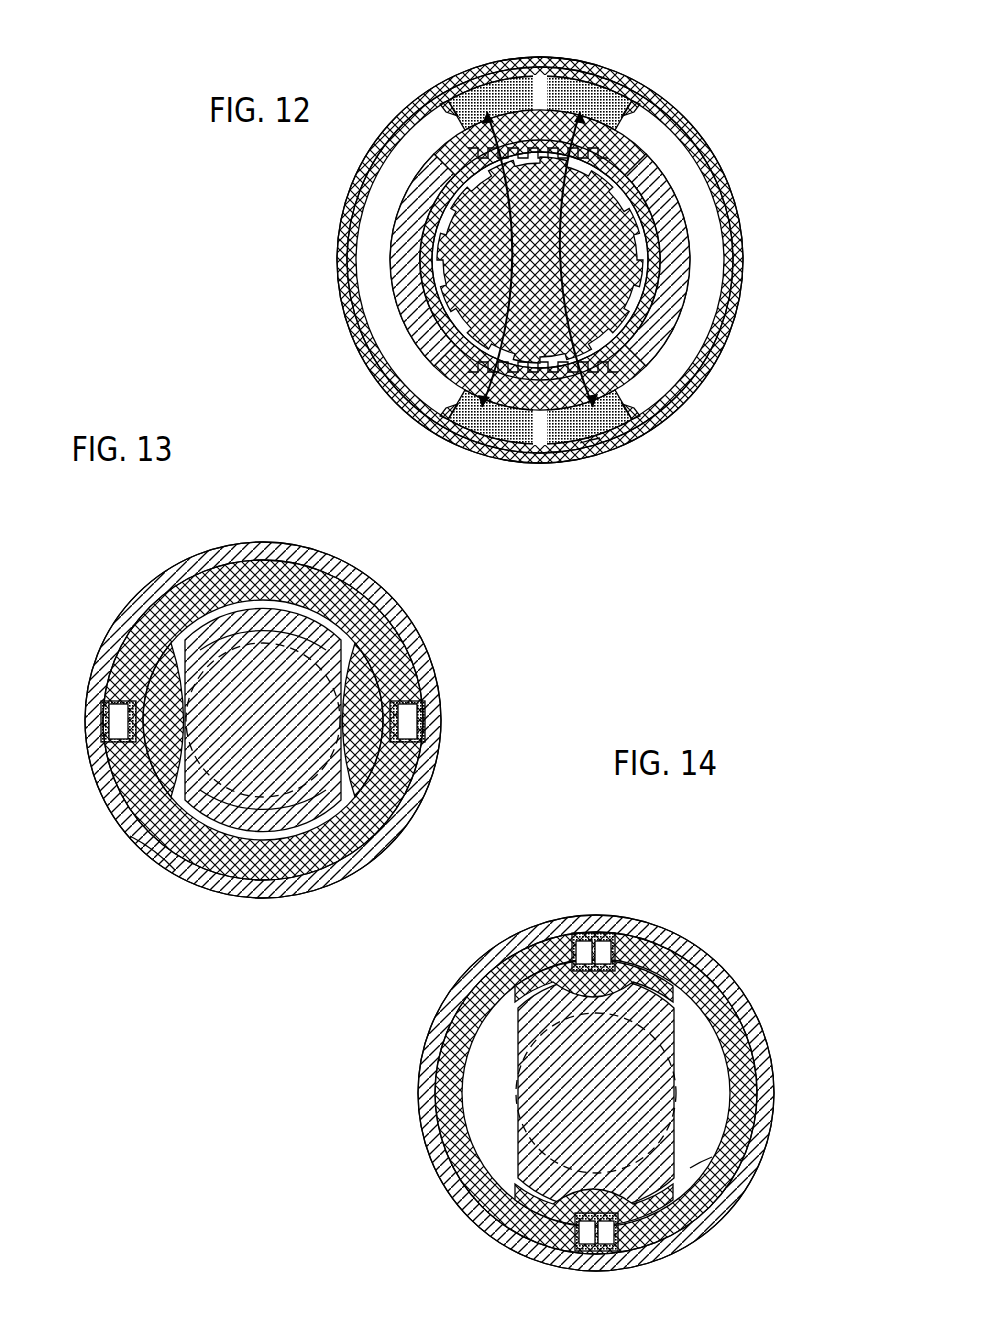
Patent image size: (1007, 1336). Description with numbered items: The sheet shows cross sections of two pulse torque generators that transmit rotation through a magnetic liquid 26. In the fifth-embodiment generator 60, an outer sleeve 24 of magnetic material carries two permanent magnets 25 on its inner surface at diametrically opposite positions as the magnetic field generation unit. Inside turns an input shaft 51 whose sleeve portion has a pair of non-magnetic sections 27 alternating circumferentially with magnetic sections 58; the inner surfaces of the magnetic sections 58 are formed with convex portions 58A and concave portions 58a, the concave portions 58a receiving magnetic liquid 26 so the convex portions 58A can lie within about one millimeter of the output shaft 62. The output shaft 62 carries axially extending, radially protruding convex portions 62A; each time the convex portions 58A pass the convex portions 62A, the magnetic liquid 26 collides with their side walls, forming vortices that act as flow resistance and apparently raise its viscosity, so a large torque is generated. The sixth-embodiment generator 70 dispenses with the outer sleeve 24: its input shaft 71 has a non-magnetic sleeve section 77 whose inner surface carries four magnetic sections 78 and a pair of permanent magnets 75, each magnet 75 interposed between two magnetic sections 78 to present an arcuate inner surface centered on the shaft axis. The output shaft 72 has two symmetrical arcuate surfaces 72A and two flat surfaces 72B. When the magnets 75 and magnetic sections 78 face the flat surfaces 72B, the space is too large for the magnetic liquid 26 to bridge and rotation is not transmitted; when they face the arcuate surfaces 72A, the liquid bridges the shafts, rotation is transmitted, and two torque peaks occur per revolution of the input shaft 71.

In FIG. 12, the motor 60 is at (772, 57).
In FIG. 12, the outer sleeve 24 is at (697, 403).
In FIG. 12, the input shaft 51 is at (700, 230).
In FIG. 12, the permanent magnets 25 is at (622, 61).
In FIG. 12, the magnetic sections 58 is at (632, 130).
In FIG. 12, the convex portions 58A is at (645, 158).
In FIG. 12, the concave portions 58a is at (595, 460).
In FIG. 12, the magnetic liquid 26 is at (690, 252).
In FIG. 13, the magnetic liquid 26 is at (380, 830).
In FIG. 14, the magnetic liquid 26 is at (760, 1095).
In FIG. 12, the non-magnetic sections 27 is at (672, 192).
In FIG. 12, the convex portions 62A is at (655, 296).
In FIG. 12, the output shaft 62 is at (640, 308).
In FIG. 13, the motor 70 is at (527, 630).
In FIG. 14, the motor 70 is at (757, 893).
In FIG. 13, the input shaft 71 is at (418, 620).
In FIG. 14, the input shaft 71 is at (767, 1027).
In FIG. 13, the non-magnetic sleeve section 77 is at (150, 835).
In FIG. 13, the magnetic sections 78 is at (120, 655).
In FIG. 14, the magnetic sections 78 is at (535, 945).
In FIG. 13, the permanent magnets 75 is at (100, 720).
In FIG. 14, the permanent magnets 75 is at (600, 933).
In FIG. 13, the output shaft 72 is at (300, 632).
In FIG. 14, the output shaft 72 is at (527, 1118).
In FIG. 13, the arcuate surfaces 72A is at (215, 852).
In FIG. 13, the flat surfaces 72B is at (172, 598).